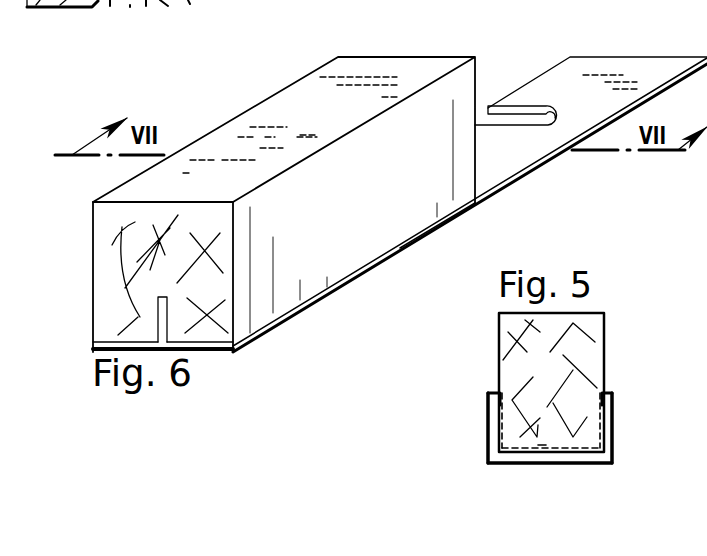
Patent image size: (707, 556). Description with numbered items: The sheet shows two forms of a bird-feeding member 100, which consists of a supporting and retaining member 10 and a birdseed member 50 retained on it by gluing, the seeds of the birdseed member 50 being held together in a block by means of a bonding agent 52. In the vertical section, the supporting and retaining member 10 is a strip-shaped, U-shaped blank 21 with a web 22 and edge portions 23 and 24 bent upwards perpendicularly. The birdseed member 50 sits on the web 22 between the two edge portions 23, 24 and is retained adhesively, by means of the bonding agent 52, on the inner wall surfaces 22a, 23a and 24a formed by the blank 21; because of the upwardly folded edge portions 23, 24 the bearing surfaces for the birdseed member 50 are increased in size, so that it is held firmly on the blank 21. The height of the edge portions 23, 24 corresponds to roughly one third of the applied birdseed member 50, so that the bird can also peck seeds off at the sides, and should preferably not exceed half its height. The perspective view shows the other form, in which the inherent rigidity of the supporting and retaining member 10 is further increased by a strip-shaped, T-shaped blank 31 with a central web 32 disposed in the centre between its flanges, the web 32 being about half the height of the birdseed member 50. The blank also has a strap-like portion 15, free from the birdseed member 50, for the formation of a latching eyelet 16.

In FIG. 6, the supporting and retaining member 10 is at (300, 328).
In FIG. 6, the strap-like portion 15 is at (628, 65).
In FIG. 6, the latching eyelet 16 is at (552, 108).
In FIG. 5, the U-shaped blank 21 is at (487, 473).
In FIG. 5, the web 22 is at (558, 458).
In FIG. 5, the inner wall surface 22a is at (585, 450).
In FIG. 5, the edge portion 23 is at (607, 402).
In FIG. 5, the inner wall surface 23a is at (600, 424).
In FIG. 5, the edge portion 24 is at (495, 428).
In FIG. 5, the inner wall surface 24a is at (503, 403).
In FIG. 6, the blank 31 is at (425, 232).
In FIG. 6, the central web 32 is at (162, 303).
In FIG. 6, the birdseed member 50 is at (295, 90).
In FIG. 5, the birdseed member 50 is at (585, 352).
In FIG. 5, the bonding agent 52 is at (540, 450).
In FIG. 6, the bird-feeding member 100 is at (100, 188).